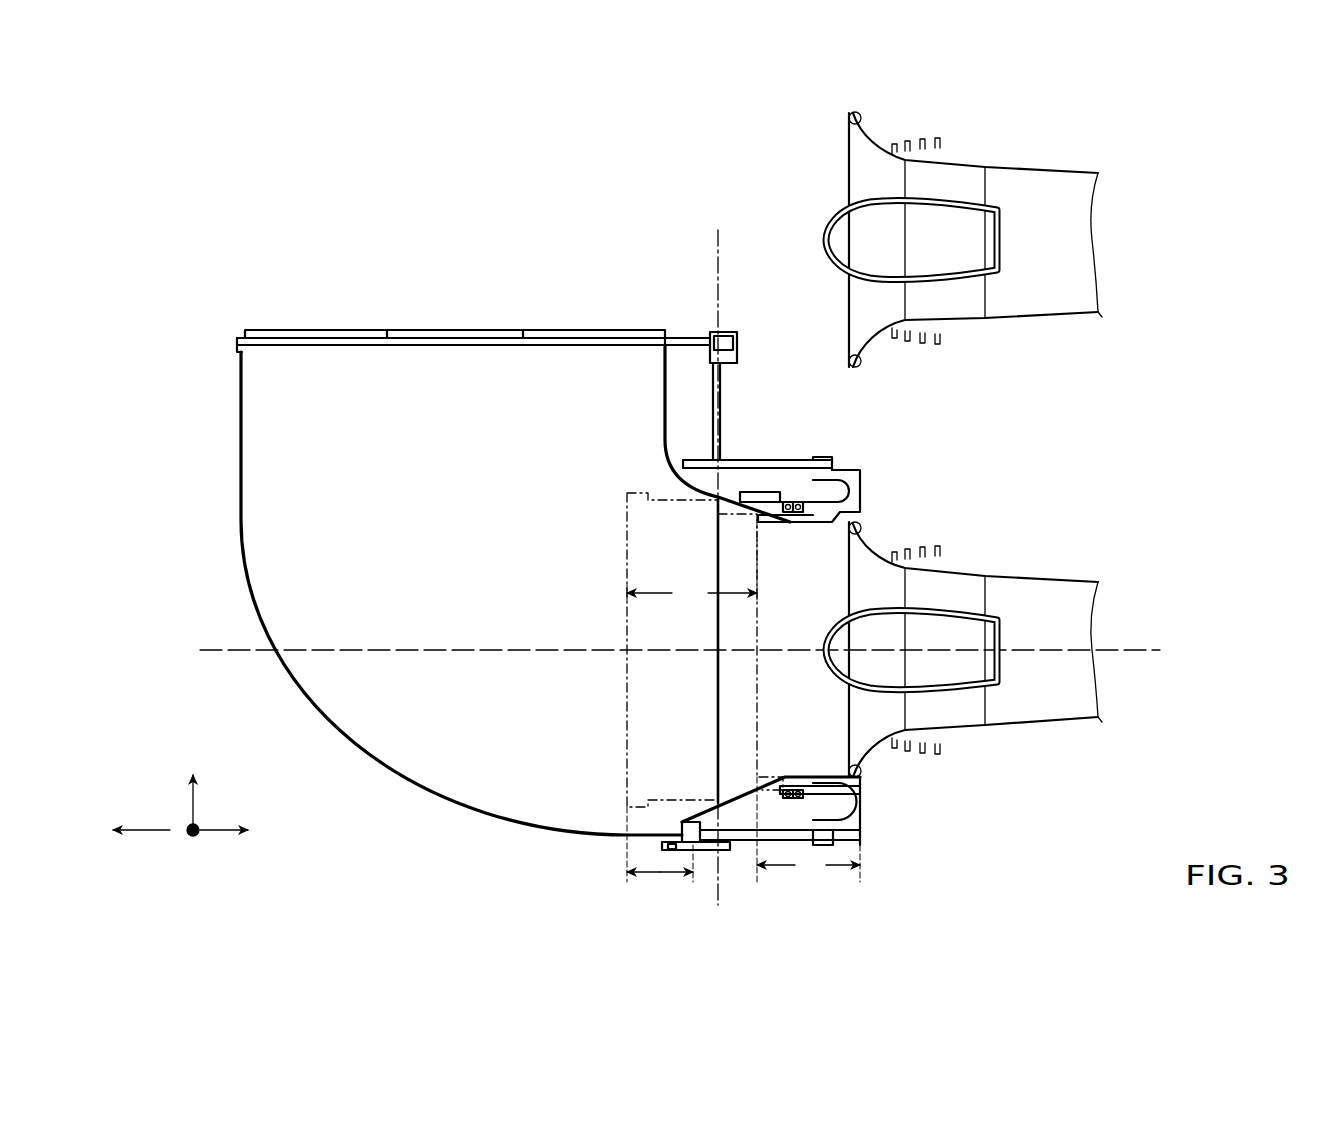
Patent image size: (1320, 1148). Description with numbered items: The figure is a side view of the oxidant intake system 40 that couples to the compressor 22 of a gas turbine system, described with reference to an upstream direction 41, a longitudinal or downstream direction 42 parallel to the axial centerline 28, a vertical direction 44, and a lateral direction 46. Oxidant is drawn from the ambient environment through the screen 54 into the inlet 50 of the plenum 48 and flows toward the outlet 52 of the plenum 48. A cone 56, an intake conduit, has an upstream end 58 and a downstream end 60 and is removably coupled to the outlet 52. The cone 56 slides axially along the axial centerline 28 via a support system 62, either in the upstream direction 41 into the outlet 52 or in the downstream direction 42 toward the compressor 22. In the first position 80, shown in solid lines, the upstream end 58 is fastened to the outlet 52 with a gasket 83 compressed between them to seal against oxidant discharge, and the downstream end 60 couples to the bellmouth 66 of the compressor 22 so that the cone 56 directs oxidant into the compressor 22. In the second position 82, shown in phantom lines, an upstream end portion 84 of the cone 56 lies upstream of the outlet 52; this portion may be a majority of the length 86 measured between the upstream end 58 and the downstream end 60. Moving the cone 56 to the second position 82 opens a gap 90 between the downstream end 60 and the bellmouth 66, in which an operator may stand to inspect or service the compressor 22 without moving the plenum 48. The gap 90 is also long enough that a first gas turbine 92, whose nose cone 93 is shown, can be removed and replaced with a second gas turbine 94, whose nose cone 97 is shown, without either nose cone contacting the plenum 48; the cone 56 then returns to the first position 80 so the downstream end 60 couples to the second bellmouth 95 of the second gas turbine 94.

The compressor 22 is at (965, 571).
The axial centerline 28 is at (1128, 648).
The oxidant intake system 40 is at (891, 419).
The upstream direction 41 is at (146, 828).
The longitudinal axis or downstream direction 42 is at (215, 828).
The vertical axis or direction 44 is at (190, 808).
The lateral axis or direction 46 is at (198, 836).
The plenum 48 is at (320, 710).
The inlet 50 is at (236, 352).
The outlet 52 is at (717, 492).
The screen 54 is at (322, 328).
The cone 56 is at (793, 501).
The upstream end 58 is at (748, 557).
The downstream end 60 is at (861, 490).
The support system 62 is at (867, 838).
The bellmouth 66 is at (878, 552).
The first position 80 is at (718, 718).
The second position 82 is at (627, 685).
The gasket 83 is at (723, 810).
The upstream end portion 84 is at (660, 872).
The length 86 is at (692, 564).
The gap 90 is at (808, 829).
The first gas turbine 92 is at (966, 749).
The nose cone 93 is at (863, 690).
The second gas turbine 94 is at (1066, 146).
The second bellmouth 95 is at (875, 142).
The nose cone 97 is at (828, 253).